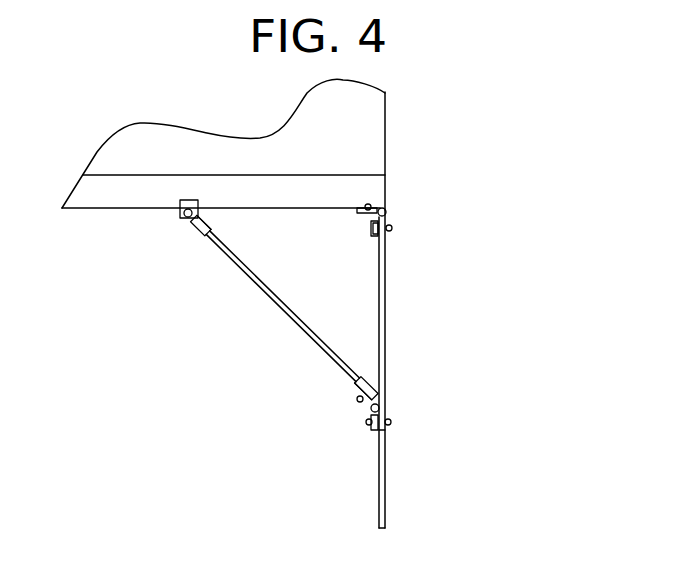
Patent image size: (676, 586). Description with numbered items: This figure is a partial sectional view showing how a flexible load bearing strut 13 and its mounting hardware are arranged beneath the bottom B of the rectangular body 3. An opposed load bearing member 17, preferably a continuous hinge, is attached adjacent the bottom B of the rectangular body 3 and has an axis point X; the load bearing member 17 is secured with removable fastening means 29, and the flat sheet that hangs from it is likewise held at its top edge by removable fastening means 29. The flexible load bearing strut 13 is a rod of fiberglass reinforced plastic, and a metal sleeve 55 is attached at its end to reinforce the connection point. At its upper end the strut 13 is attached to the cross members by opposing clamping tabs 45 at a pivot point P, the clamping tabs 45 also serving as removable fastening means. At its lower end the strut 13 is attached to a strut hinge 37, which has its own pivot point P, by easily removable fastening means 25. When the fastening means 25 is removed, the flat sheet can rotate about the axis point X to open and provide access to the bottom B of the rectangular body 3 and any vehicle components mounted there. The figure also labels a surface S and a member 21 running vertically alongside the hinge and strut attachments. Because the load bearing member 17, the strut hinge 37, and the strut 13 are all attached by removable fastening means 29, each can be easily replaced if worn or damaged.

The rectangular body 3 is at (272, 142).
The bottom B is at (105, 210).
The mounting surface S is at (388, 138).
The axis point X is at (387, 211).
The pivot point P is at (187, 220).
The flexible load bearing strut 13 is at (257, 286).
The opposed load bearing member 17 is at (385, 238).
The track 21 is at (387, 357).
The easily removable fastening means 25 is at (360, 397).
The removable fastening means 29 is at (368, 205).
The strut hinge 37 is at (377, 430).
The clamping tab 45 is at (193, 200).
The metal sleeve 55 is at (203, 224).